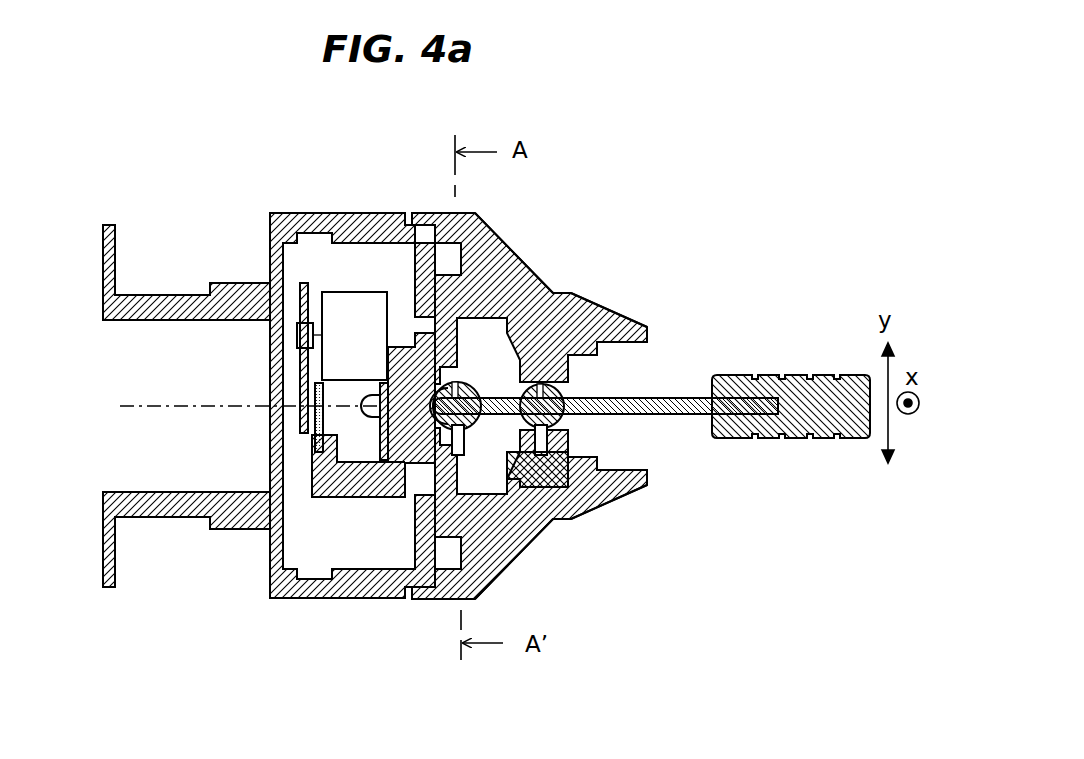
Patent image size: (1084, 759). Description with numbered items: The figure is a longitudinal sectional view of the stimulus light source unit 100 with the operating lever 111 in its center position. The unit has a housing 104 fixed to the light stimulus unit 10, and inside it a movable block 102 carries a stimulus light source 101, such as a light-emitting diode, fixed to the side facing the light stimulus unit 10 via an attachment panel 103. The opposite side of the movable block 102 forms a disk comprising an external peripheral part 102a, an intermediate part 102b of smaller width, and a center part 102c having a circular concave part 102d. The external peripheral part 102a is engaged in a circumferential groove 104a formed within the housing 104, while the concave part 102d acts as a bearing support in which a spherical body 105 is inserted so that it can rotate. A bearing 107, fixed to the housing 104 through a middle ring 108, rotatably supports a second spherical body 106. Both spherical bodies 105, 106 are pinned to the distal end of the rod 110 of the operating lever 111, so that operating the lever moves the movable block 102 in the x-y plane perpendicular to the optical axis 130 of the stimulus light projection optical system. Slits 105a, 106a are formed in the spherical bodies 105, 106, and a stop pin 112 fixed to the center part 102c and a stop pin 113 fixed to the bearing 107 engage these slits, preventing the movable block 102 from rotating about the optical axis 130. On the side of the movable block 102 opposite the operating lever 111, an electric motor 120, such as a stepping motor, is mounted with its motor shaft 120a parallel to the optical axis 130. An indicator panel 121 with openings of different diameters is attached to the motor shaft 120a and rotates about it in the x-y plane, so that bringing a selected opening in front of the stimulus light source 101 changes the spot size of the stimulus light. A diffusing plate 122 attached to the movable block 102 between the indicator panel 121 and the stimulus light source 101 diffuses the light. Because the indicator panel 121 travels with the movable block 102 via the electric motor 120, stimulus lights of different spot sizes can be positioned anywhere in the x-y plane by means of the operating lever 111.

The light stimulus unit 10 is at (127, 247).
The stimulus light source unit 100 is at (288, 177).
The stimulus light source 101 is at (370, 406).
The movable block 102 is at (398, 318).
The external peripheral part 102a is at (473, 315).
The intermediate part 102b is at (533, 312).
The center part 102c is at (592, 300).
The circular concave part 102d is at (446, 400).
The attachment panel 103 is at (381, 470).
The housing 104 is at (345, 213).
The circumferential groove 104a is at (445, 262).
The spherical body 105 is at (560, 340).
The slit 105a is at (577, 478).
The spherical body 106 is at (582, 384).
The slit 106a is at (562, 425).
The bearing 107 is at (448, 380).
The middle ring 108 is at (470, 212).
The rod 110 is at (665, 395).
The operating lever 111 is at (790, 373).
The stop pin 112 is at (548, 506).
The stop pin 113 is at (562, 448).
The electric motor 120 is at (337, 325).
The motor shaft 120a is at (297, 340).
The indicator panel 121 is at (298, 382).
The diffusing plate 122 is at (314, 440).
The optical axis 130 is at (173, 410).